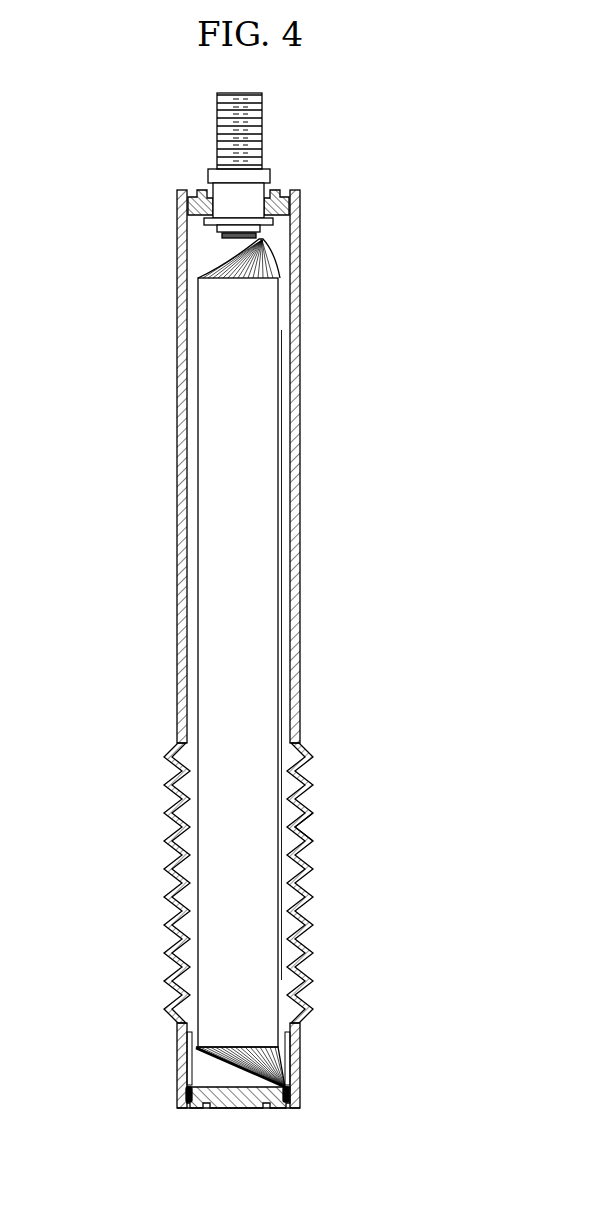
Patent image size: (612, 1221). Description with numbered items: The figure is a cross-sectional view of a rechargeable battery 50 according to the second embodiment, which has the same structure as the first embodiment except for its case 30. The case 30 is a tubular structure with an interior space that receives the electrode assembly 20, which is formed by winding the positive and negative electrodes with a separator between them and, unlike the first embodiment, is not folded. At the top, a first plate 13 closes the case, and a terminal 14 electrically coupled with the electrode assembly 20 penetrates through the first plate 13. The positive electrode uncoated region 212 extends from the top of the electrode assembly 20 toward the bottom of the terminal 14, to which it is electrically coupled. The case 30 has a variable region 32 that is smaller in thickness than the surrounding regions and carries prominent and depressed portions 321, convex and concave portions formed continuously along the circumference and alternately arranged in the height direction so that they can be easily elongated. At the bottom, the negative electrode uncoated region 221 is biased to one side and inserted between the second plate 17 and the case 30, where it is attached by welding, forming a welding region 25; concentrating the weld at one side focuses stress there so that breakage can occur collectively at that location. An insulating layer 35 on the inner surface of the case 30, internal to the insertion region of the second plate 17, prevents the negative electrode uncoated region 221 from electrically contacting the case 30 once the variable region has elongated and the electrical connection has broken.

The rechargeable battery 50 is at (115, 110).
The terminal 14 is at (262, 112).
The first plate 13 is at (283, 205).
The case 30 is at (310, 438).
The variable region 32 is at (326, 797).
The prominent and depressed portions 321 is at (313, 827).
The electrode assembly 20 is at (262, 603).
The positive electrode uncoated region 212 is at (227, 268).
The negative electrode uncoated region 221 is at (251, 1067).
The insulating layer 35 is at (196, 1062).
The welding region 25 is at (300, 1092).
The second plate 17 is at (238, 1110).